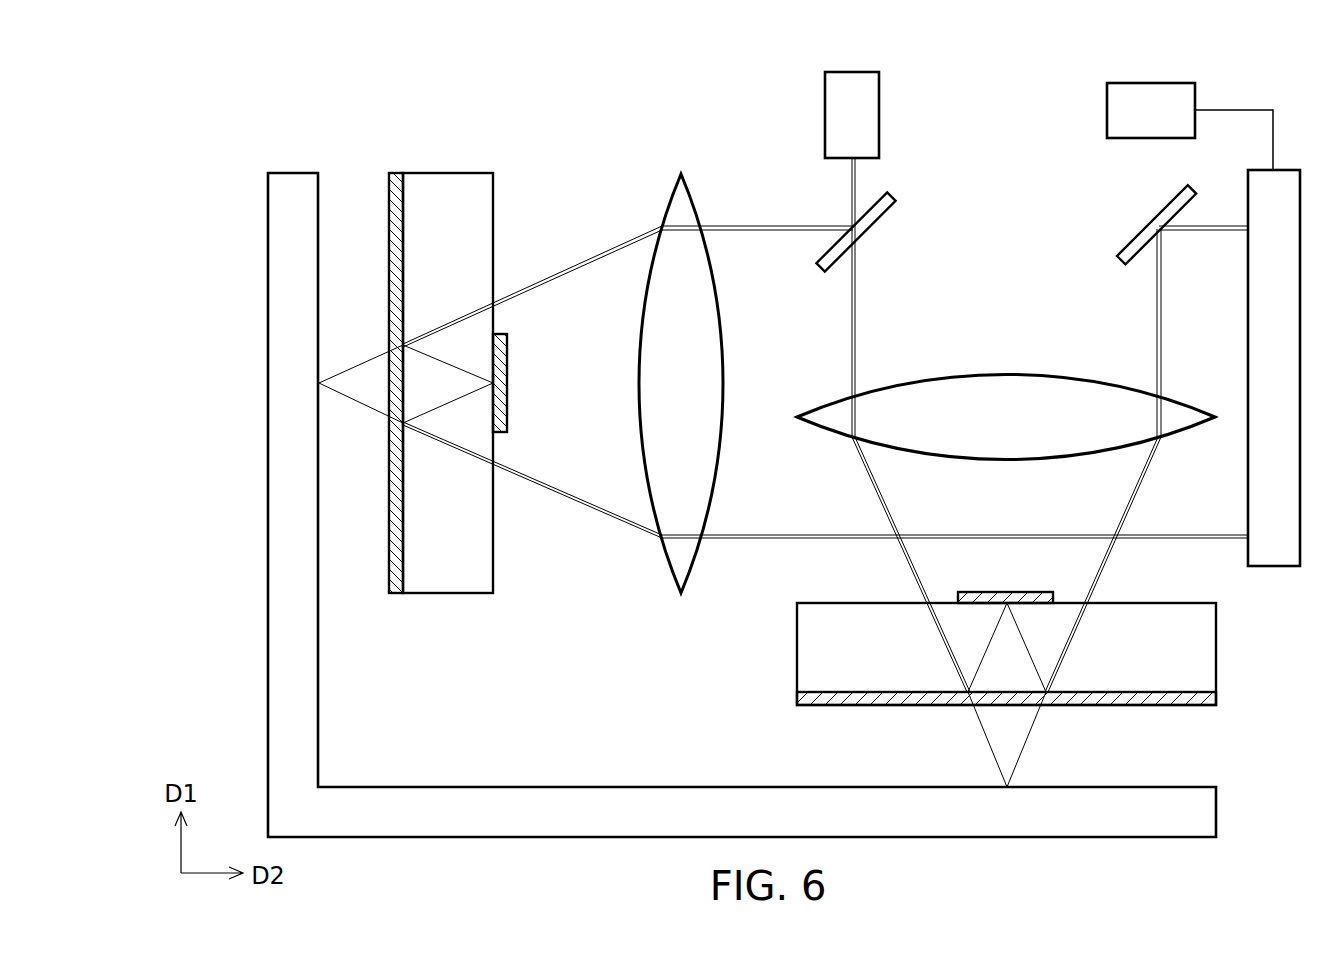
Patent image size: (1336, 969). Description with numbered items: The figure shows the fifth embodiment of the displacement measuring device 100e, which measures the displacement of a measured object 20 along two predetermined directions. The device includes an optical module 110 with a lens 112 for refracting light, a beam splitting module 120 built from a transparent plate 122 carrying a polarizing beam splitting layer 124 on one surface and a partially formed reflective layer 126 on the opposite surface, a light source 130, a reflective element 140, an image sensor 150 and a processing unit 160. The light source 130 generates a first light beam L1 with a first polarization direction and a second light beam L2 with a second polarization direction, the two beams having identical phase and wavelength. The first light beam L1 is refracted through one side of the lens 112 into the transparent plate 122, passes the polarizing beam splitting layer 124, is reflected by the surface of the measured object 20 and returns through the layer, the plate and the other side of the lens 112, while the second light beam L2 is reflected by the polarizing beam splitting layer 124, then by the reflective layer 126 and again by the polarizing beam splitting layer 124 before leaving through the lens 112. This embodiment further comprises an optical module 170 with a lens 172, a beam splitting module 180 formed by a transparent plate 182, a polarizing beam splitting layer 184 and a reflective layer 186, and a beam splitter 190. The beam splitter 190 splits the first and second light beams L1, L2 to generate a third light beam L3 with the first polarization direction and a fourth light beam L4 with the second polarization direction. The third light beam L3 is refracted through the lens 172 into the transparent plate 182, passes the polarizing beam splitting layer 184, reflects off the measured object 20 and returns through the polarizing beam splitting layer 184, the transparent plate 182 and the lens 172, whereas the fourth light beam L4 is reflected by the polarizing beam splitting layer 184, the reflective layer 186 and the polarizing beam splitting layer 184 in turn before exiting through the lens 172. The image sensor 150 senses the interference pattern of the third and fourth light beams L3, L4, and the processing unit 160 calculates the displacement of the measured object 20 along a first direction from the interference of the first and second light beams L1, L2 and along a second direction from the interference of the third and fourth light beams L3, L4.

The displacement measuring device 100e is at (620, 102).
The measured object 20 is at (749, 826).
The optical module 110 is at (981, 385).
The lens 112 is at (1008, 373).
The beam splitting module 120 is at (1006, 657).
The transparent plate 122 is at (1203, 660).
The polarizing beam splitting layer 124 is at (1100, 705).
The reflective layer 126 is at (1010, 597).
The light source 130 is at (832, 132).
The reflective element 140 is at (1148, 232).
The image sensor 150 is at (1253, 364).
The processing unit 160 is at (1131, 124).
The optical module 170 is at (717, 354).
The lens 172 is at (721, 450).
The beam splitting module 180 is at (477, 391).
The transparent plate 182 is at (461, 583).
The polarizing beam splitting layer 184 is at (391, 583).
The reflective layer 186 is at (509, 378).
The beam splitter 190 is at (878, 215).
The first light beam L1 is at (848, 320).
The second light beam L2 is at (860, 320).
The third light beam L3 is at (745, 239).
The fourth light beam L4 is at (745, 224).